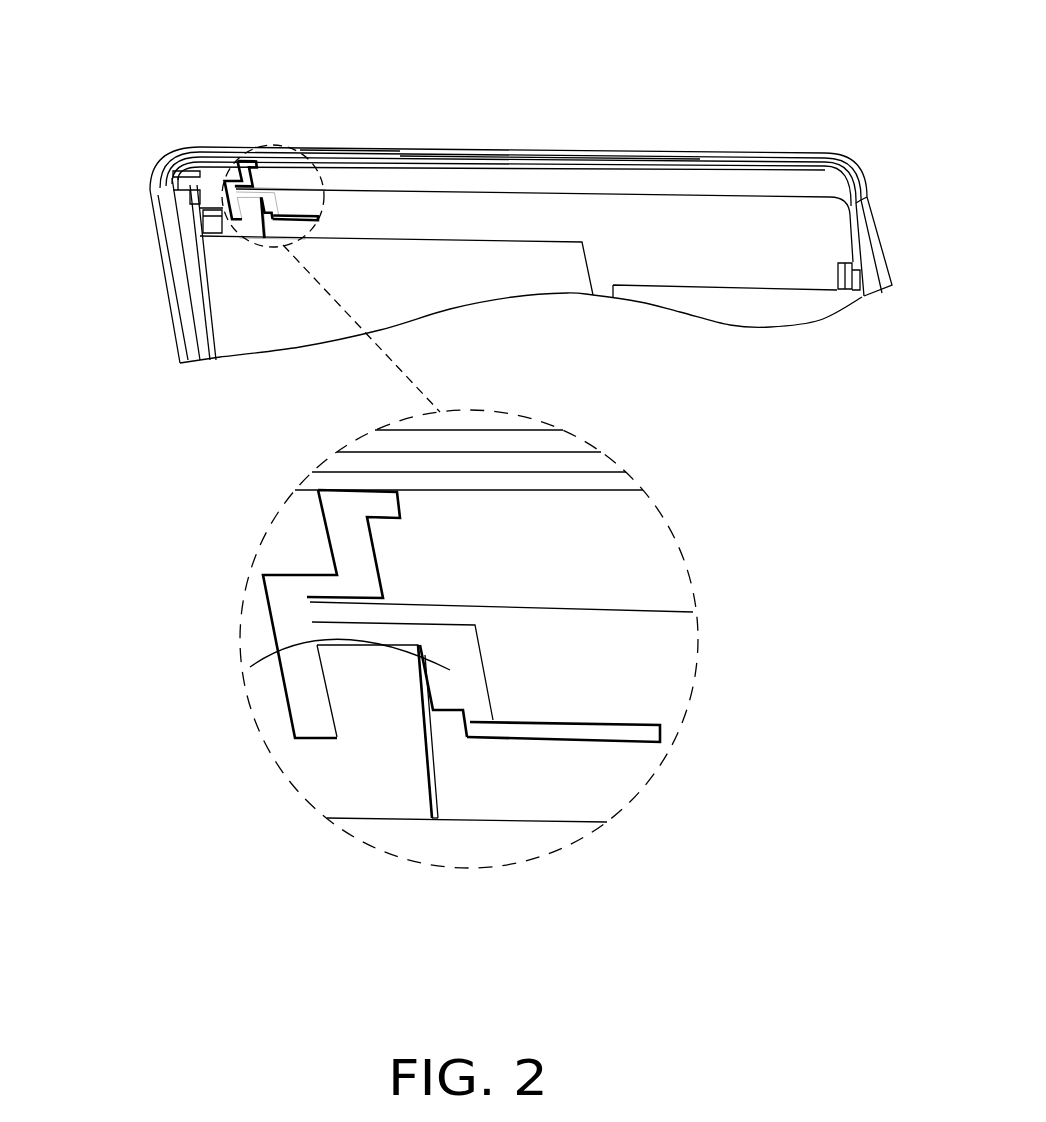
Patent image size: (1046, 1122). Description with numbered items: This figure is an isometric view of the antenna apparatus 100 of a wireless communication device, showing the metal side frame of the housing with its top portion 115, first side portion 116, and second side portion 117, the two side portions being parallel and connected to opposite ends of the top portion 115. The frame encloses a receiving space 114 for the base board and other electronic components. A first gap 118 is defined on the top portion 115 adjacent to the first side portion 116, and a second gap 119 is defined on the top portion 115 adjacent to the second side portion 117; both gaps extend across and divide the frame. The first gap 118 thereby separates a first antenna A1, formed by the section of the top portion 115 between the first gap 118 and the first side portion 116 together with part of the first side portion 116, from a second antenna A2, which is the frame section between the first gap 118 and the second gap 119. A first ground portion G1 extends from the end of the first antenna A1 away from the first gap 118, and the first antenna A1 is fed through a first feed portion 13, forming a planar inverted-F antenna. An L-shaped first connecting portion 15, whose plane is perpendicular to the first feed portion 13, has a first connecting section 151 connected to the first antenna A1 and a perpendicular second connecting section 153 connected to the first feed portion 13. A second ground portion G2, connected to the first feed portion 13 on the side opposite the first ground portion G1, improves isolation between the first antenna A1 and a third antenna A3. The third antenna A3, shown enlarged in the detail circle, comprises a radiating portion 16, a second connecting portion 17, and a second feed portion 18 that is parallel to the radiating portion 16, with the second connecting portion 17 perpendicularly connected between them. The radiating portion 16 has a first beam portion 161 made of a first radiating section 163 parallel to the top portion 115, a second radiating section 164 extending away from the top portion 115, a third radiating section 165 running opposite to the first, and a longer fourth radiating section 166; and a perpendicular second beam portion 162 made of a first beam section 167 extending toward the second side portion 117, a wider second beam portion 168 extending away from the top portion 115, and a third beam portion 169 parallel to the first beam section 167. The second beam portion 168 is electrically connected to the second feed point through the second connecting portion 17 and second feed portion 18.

The antenna apparatus 100 is at (547, 37).
The first antenna A1 is at (144, 233).
The second antenna A2 is at (710, 163).
The third antenna A3 is at (258, 177).
The first feed portion 13 is at (205, 211).
The first connecting portion 15 is at (121, 181).
The first connecting section 151 is at (180, 171).
The second connecting section 153 is at (186, 189).
The radiating portion 16 is at (369, 653).
The first beam portion 161 is at (401, 611).
The second beam portion 162 is at (382, 728).
The first radiating section 163 is at (384, 505).
The second radiating section 164 is at (348, 538).
The third radiating section 165 is at (323, 585).
The fourth radiating section 166 is at (433, 661).
The first beam section 167 is at (370, 634).
The second beam portion 168 is at (447, 713).
The third beam portion 169 is at (513, 728).
The second connecting portion 17 is at (430, 717).
The second feed portion 18 is at (443, 783).
The receiving space 114 is at (791, 214).
The top portion 115 is at (533, 160).
The first side portion 116 is at (172, 302).
The second side portion 117 is at (886, 246).
The first gap 118 is at (322, 152).
The second gap 119 is at (868, 205).
The first ground portion G1 is at (182, 262).
The second ground portion G2 is at (204, 226).